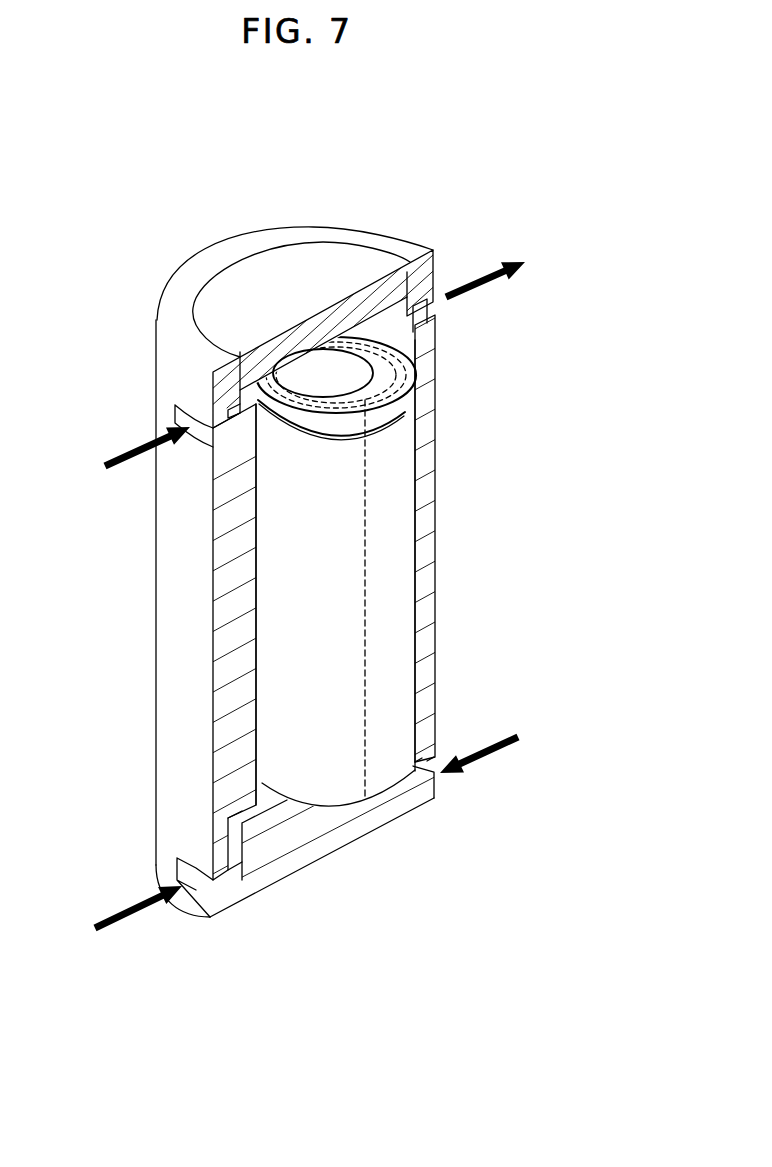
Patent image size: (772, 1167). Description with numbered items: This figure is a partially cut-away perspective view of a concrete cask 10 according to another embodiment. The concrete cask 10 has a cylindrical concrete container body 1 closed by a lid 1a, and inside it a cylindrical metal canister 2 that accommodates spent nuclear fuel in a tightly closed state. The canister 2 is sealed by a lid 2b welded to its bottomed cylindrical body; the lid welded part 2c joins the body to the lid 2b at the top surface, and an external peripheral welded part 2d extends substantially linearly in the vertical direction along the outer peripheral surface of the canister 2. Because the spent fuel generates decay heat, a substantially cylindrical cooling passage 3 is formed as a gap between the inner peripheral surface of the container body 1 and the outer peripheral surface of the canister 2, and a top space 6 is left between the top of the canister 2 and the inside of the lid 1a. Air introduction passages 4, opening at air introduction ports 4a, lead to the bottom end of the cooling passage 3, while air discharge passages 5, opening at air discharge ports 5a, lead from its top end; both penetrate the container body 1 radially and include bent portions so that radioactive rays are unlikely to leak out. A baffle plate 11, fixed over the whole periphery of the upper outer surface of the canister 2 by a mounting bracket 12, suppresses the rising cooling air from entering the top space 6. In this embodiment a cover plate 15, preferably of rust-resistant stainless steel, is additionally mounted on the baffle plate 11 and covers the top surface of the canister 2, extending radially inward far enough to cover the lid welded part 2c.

The concrete cask 10 is at (196, 196).
The container body 1 is at (170, 668).
The lid 1a is at (331, 255).
The canister 2 is at (400, 593).
The lid 2b is at (306, 365).
The lid welded part 2c is at (400, 371).
The external peripheral welded part 2d is at (367, 530).
The cooling passage 3 is at (263, 762).
The air introduction passage 4 is at (420, 790).
The air introduction port 4a is at (203, 885).
The air discharge passage 5 is at (436, 334).
The air discharge port 5a is at (177, 408).
The top space 6 is at (364, 342).
The baffle plate 11 is at (400, 413).
The mounting bracket 12 is at (287, 437).
The cover plate 15 is at (390, 356).